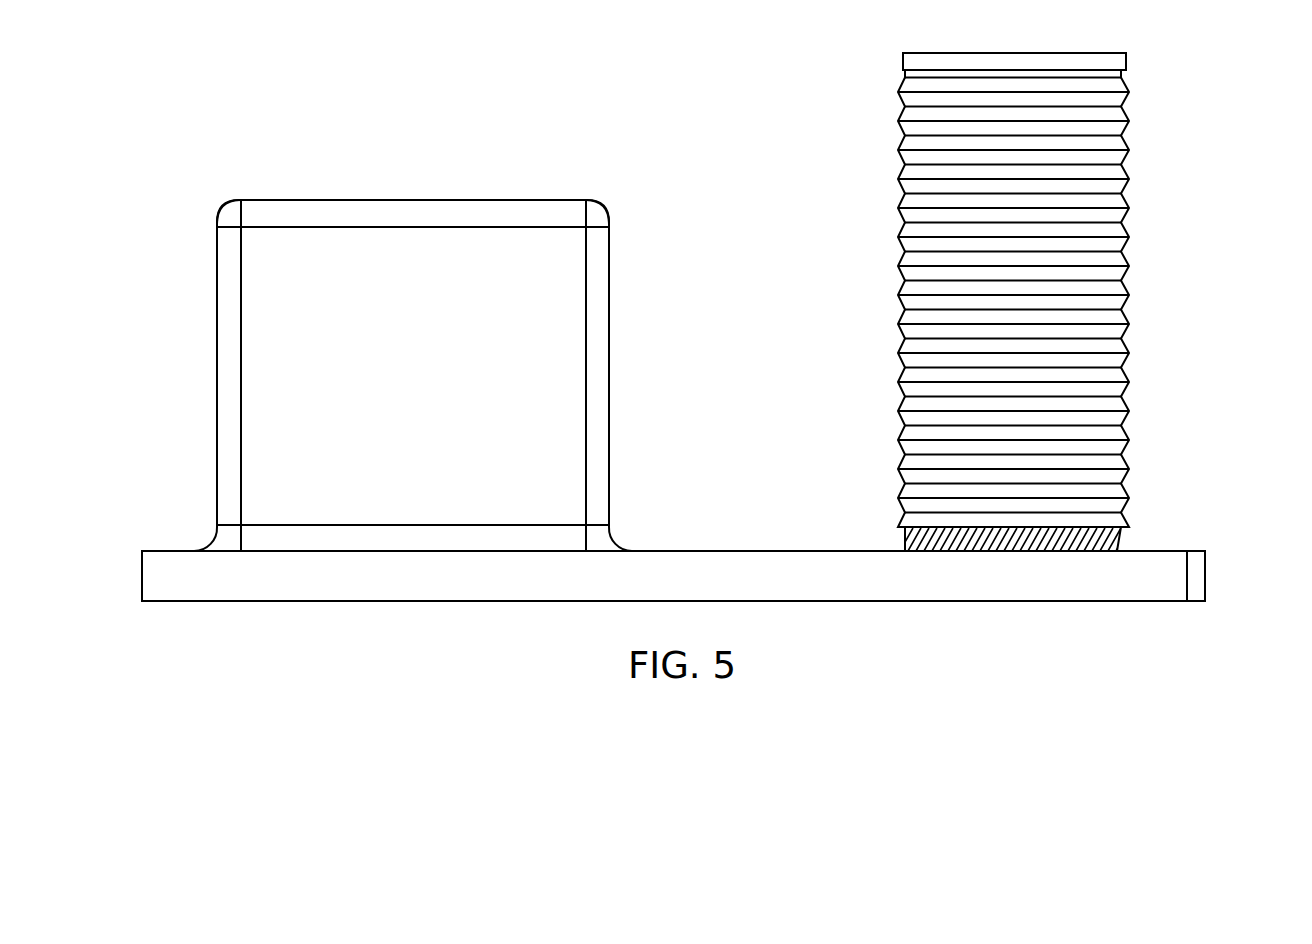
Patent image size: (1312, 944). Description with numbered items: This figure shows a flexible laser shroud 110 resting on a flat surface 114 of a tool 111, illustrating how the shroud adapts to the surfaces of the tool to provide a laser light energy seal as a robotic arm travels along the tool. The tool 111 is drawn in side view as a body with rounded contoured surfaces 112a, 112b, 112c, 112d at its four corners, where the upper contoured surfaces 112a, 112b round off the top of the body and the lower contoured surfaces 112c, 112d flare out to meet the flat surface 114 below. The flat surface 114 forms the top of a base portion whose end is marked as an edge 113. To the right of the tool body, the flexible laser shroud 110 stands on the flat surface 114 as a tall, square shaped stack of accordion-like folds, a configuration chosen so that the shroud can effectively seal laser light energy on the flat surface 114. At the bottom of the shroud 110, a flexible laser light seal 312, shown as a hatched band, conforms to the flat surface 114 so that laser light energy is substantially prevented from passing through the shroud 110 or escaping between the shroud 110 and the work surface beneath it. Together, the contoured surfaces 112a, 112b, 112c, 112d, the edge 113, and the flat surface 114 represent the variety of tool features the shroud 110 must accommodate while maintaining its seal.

The flexible laser shroud 110 is at (1140, 55).
The tool 111 is at (411, 339).
The contoured surface 112a is at (226, 198).
The contoured surface 112b is at (609, 215).
The contoured surface 112c is at (613, 542).
The contoured surface 112d is at (212, 545).
The edge 113 is at (1206, 580).
The flat surface 114 is at (761, 550).
The flexible laser light seal 312 is at (903, 548).